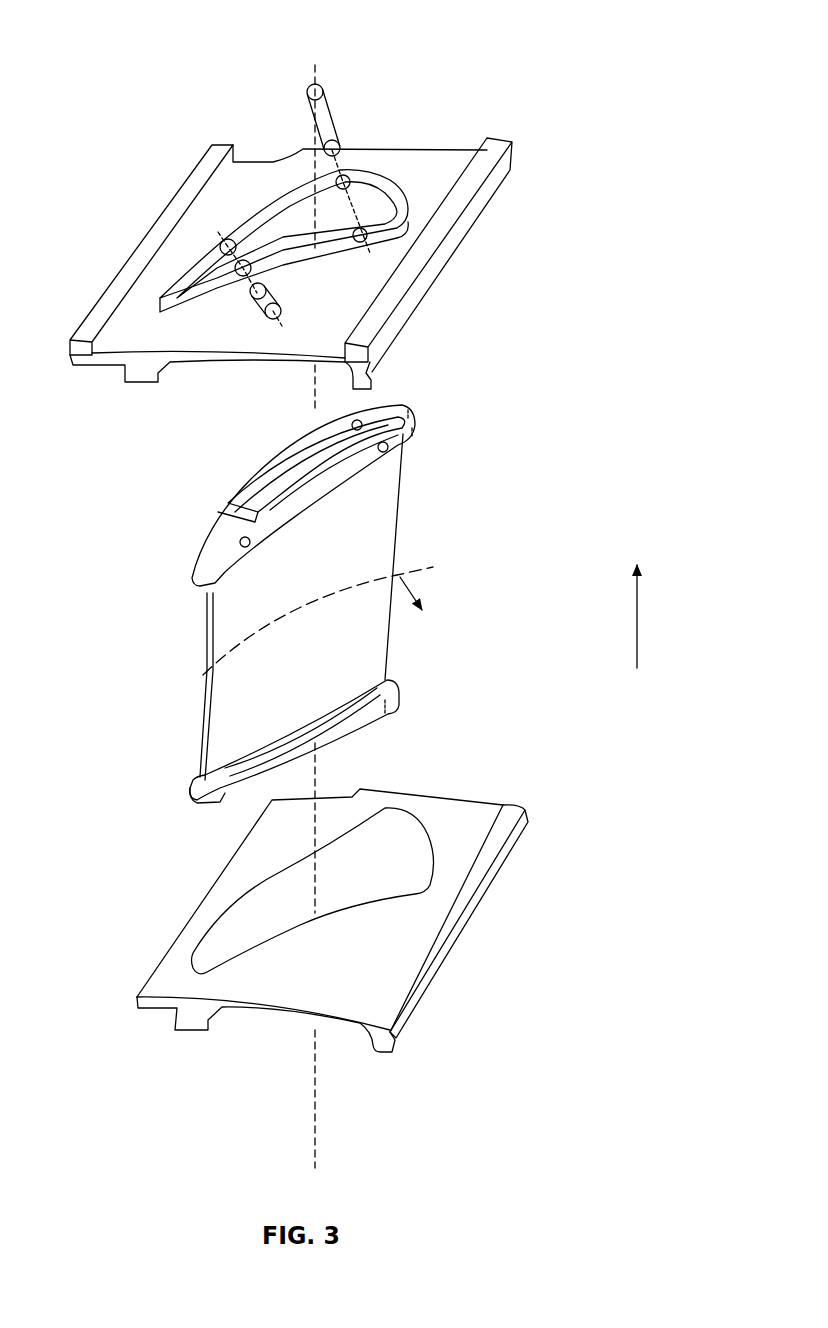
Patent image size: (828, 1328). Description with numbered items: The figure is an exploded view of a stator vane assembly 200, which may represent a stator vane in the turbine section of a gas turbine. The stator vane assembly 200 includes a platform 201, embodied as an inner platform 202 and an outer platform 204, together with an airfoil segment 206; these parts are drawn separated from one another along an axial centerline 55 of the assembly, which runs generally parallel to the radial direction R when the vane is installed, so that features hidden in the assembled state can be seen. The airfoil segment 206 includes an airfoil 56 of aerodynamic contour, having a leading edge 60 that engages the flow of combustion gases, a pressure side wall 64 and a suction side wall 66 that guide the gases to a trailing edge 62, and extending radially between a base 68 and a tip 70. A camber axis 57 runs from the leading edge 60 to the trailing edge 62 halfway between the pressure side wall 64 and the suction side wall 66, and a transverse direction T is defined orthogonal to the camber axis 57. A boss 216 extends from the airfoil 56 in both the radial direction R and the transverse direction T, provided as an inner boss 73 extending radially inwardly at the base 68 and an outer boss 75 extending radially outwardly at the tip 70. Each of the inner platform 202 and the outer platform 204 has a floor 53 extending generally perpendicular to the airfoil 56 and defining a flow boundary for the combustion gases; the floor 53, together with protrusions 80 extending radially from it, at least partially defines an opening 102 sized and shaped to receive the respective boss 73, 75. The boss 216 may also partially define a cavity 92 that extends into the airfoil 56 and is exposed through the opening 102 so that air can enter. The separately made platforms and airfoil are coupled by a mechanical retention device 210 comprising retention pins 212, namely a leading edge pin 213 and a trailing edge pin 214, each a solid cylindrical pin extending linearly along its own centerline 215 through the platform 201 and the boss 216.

The stator vane assembly 200 is at (590, 148).
The platform 201 is at (240, 316).
The inner platform 202 is at (447, 1035).
The outer platform 204 is at (295, 206).
The airfoil segment 206 is at (332, 602).
The floor 53 is at (447, 170).
The axial centerline 55 is at (307, 77).
The airfoil 56 is at (321, 607).
The camber axis 57 is at (418, 565).
The leading edge 60 is at (395, 633).
The trailing edge 62 is at (258, 772).
The pressure side wall 64 is at (366, 522).
The suction side wall 66 is at (289, 462).
The base 68 is at (393, 680).
The tip 70 is at (209, 608).
The inner boss 73 is at (226, 802).
The outer boss 75 is at (362, 443).
The protrusion 80 is at (367, 182).
The cavity 92 is at (285, 472).
The opening 102 is at (362, 205).
The mechanical retention device 210 is at (328, 80).
The retention pins 212 is at (294, 202).
The leading edge pin 213 is at (318, 138).
The trailing edge pin 214 is at (278, 303).
The centerline 215 is at (326, 122).
The boss 216 is at (395, 408).
The transverse direction T is at (403, 577).
The radial direction R is at (640, 627).